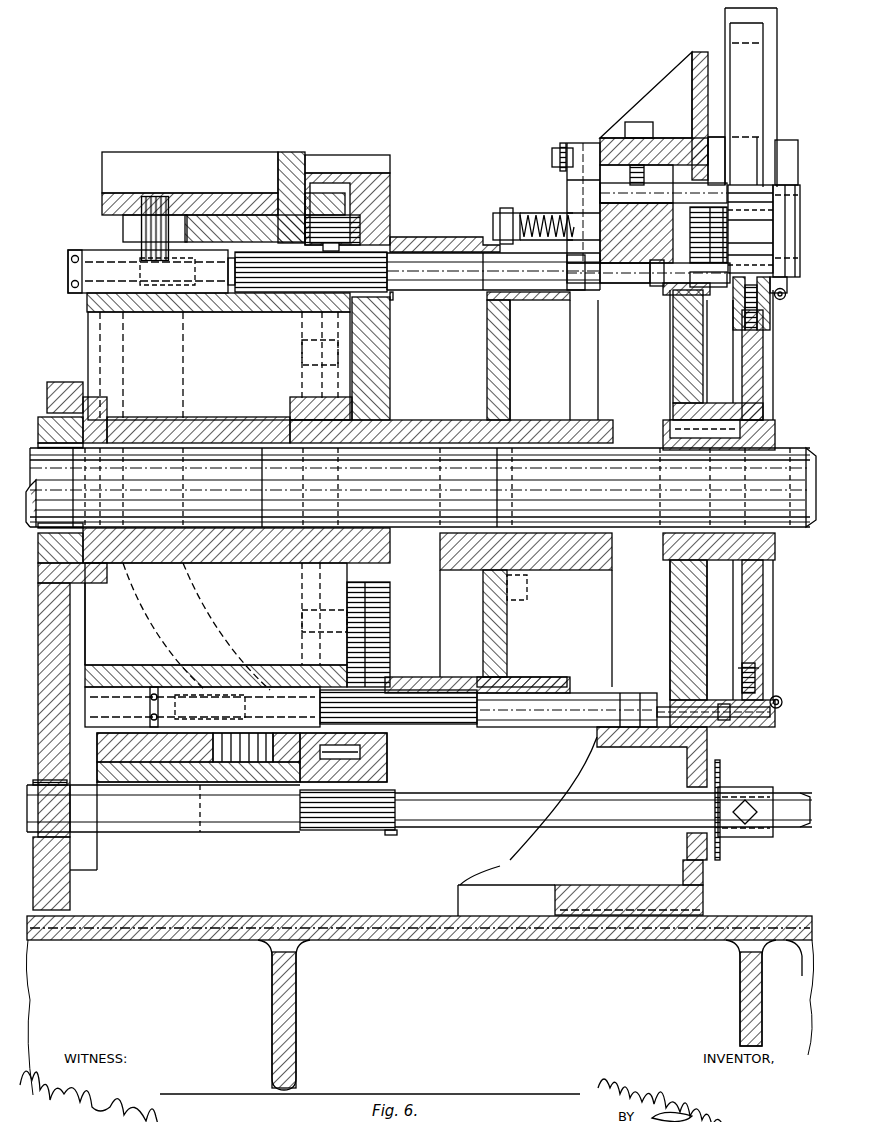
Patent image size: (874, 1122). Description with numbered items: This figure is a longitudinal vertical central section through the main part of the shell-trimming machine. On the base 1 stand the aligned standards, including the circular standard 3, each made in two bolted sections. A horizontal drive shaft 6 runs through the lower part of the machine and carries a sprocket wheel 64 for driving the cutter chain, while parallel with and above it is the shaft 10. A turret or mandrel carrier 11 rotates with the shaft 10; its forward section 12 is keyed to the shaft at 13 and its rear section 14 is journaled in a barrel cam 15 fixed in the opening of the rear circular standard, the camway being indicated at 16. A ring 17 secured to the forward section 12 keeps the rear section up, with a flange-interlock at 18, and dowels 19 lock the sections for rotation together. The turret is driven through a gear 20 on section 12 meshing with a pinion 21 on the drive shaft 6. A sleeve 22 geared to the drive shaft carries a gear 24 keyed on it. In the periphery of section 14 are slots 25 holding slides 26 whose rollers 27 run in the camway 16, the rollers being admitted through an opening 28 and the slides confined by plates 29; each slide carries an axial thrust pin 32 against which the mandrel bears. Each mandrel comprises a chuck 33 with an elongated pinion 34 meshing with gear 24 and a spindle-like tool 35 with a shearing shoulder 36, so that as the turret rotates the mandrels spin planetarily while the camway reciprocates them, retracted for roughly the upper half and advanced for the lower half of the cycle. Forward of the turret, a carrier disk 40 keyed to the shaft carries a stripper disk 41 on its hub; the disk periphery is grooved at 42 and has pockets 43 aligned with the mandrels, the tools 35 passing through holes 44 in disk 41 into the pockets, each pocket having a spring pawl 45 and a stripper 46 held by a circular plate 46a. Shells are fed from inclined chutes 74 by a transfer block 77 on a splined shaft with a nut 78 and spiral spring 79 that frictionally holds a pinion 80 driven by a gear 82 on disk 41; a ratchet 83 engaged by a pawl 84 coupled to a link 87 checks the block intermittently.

The base 1 is at (517, 940).
The standard 3 is at (703, 893).
The drive shaft 6 is at (543, 810).
The shaft 10 is at (628, 456).
The turret or mandrel carrier 11 is at (452, 748).
The forward turret section 12 is at (488, 745).
The key 13 is at (435, 437).
The rear turret section 14 is at (228, 312).
The barrel cam 15 is at (232, 215).
The camway 16 is at (190, 382).
The ring 17 is at (330, 200).
The flange-interlock 18 is at (327, 245).
The dowels 19 is at (343, 353).
The gear 20 is at (385, 782).
The pinion 21 is at (395, 832).
The sleeve 22 is at (222, 420).
The gear 24 is at (370, 618).
The slots 25 is at (371, 707).
The slide 26 is at (177, 292).
The roller 27 is at (203, 790).
The opening 28 is at (105, 232).
The plates 29 is at (264, 242).
The thrust pin 32 is at (750, 229).
The chuck 33 is at (466, 288).
The elongated pinion 34 is at (400, 245).
The tool 35 is at (612, 283).
The shearing shoulder 36 is at (640, 288).
The carrier disk 40 is at (760, 375).
The stripper disk 41 is at (671, 346).
The circumferential groove 42 is at (758, 675).
The pockets 43 is at (767, 310).
The holes 44 is at (652, 793).
The spring pawl 45 is at (780, 708).
The stripper 46 is at (715, 718).
The circular plate 46a is at (725, 722).
The sprocket wheel 64 is at (738, 840).
The inclined chutes 74 is at (777, 103).
The transfer block 77 is at (795, 238).
The nut 78 is at (512, 208).
The spiral spring 79 is at (540, 213).
The pinion 80 is at (710, 193).
The gear 82 is at (672, 300).
The ratchet 83 is at (560, 290).
The pawl 84 is at (577, 172).
The link 87 is at (567, 140).